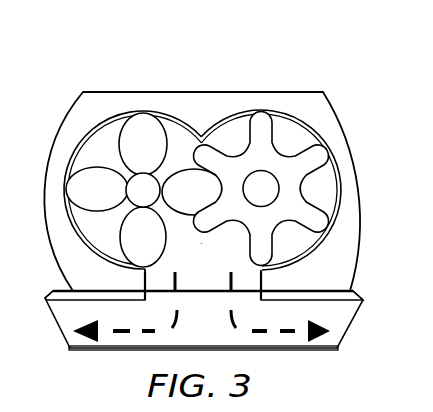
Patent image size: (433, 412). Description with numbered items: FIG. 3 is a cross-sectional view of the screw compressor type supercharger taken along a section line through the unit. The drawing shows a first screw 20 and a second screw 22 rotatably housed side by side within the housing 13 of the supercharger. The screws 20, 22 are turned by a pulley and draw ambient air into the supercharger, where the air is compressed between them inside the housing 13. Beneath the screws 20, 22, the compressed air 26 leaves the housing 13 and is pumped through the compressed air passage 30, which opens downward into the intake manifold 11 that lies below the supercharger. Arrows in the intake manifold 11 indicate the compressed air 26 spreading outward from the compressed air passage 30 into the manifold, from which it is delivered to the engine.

The intake manifold 11 is at (355, 292).
The housing 13 is at (190, 101).
The first screw 20 is at (141, 121).
The second screw 22 is at (261, 130).
The compressed air 26 is at (140, 333).
The compressed air passage 30 is at (215, 284).